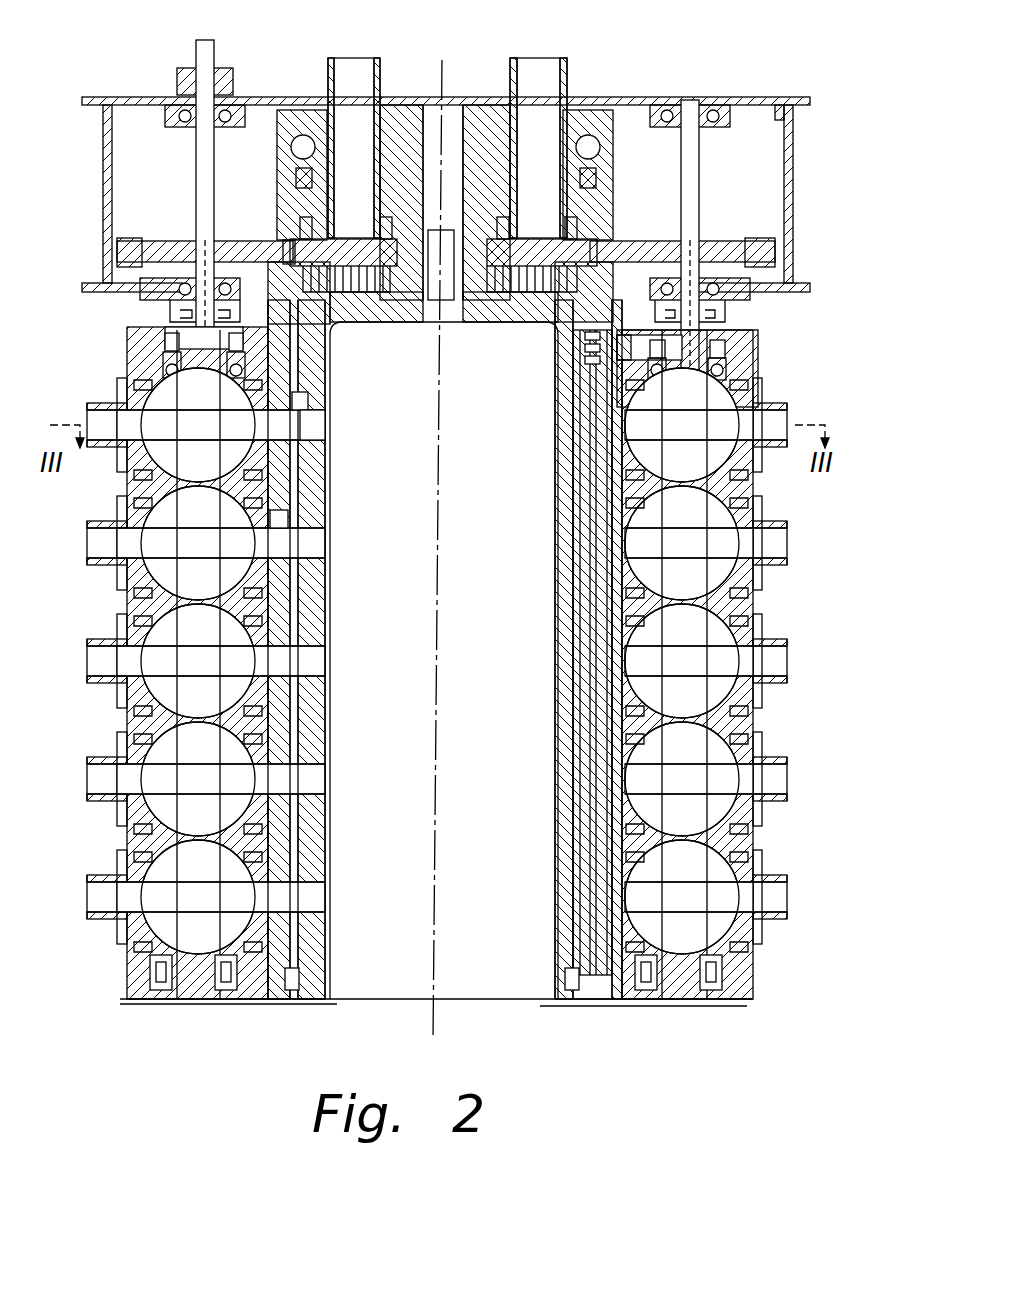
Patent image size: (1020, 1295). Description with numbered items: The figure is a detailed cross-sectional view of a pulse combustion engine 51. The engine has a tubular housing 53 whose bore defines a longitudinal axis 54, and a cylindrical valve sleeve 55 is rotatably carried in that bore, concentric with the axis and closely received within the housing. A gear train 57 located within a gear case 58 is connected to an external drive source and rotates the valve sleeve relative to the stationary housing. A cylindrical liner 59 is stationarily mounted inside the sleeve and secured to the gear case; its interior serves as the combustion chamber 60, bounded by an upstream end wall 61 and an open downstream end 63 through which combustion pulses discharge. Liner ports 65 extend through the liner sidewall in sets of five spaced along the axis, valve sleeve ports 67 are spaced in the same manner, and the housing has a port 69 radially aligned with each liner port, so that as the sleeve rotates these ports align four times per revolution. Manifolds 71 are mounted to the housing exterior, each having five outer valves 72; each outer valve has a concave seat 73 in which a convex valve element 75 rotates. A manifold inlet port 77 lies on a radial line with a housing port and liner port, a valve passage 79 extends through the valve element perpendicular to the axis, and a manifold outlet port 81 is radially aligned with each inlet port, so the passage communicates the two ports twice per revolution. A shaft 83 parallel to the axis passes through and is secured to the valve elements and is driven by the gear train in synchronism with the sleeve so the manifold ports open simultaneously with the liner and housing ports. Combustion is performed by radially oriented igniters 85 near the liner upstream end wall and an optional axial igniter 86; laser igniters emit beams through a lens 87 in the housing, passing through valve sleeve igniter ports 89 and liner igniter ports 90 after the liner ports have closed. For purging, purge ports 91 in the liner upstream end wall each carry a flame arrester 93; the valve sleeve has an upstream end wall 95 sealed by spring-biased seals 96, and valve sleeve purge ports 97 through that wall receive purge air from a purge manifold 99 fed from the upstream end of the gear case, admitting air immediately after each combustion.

The pulse combustion engine 51 is at (808, 180).
The housing 53 is at (290, 375).
The longitudinal axis 54 is at (438, 468).
The valve sleeve 55 is at (300, 488).
The gear train 57 is at (170, 248).
The gear case 58 is at (794, 146).
The liner 59 is at (310, 585).
The combustion chamber 60 is at (508, 614).
The upstream end wall 61 is at (386, 300).
The open downstream end 63 is at (330, 990).
The liner ports 65 is at (312, 438).
The valve sleeve ports 67 is at (302, 416).
The housing port 69 is at (282, 528).
The manifold 71 is at (250, 992).
The outer valve 72 is at (744, 372).
The concave seat 73 is at (215, 942).
The valve element 75 is at (165, 942).
The manifold inlet port 77 is at (112, 932).
The valve passage 79 is at (218, 795).
The manifold outlet port 81 is at (612, 794).
The shaft 83 is at (195, 718).
The igniters 85 is at (655, 334).
The igniter 86 is at (446, 228).
The lens 87 is at (585, 360).
The igniter ports 89 is at (585, 340).
The igniter ports 90 is at (585, 348).
The purge ports 91 is at (362, 300).
The flame arrester 93 is at (490, 300).
The upstream end wall 95 is at (368, 240).
The spring-biased seals 96 is at (300, 236).
The valve sleeve purge ports 97 is at (517, 240).
The purge manifold 99 is at (392, 98).